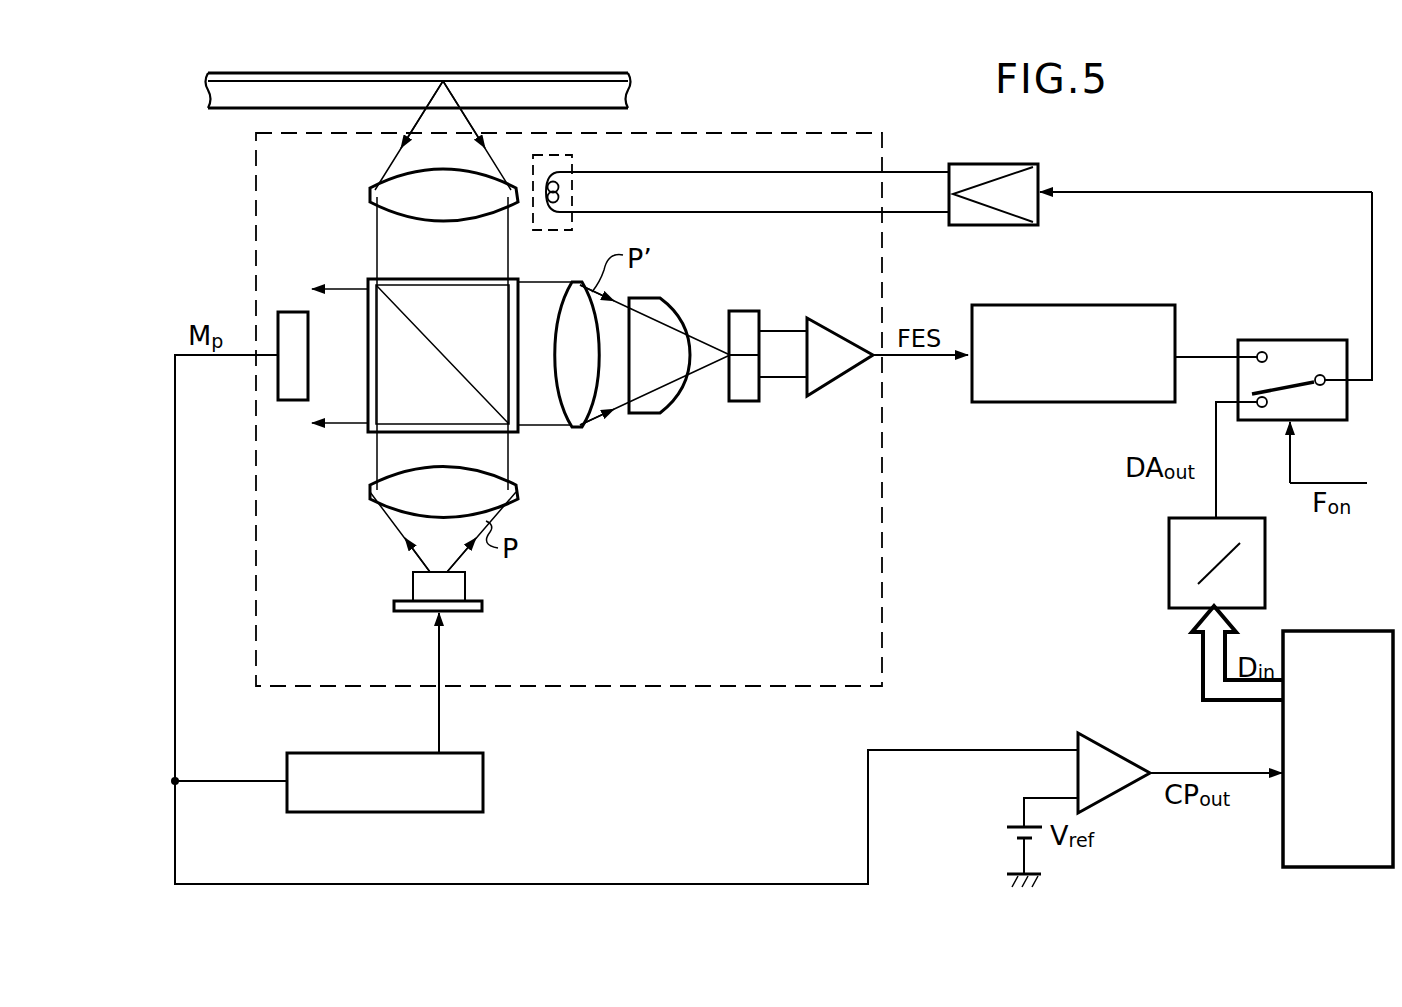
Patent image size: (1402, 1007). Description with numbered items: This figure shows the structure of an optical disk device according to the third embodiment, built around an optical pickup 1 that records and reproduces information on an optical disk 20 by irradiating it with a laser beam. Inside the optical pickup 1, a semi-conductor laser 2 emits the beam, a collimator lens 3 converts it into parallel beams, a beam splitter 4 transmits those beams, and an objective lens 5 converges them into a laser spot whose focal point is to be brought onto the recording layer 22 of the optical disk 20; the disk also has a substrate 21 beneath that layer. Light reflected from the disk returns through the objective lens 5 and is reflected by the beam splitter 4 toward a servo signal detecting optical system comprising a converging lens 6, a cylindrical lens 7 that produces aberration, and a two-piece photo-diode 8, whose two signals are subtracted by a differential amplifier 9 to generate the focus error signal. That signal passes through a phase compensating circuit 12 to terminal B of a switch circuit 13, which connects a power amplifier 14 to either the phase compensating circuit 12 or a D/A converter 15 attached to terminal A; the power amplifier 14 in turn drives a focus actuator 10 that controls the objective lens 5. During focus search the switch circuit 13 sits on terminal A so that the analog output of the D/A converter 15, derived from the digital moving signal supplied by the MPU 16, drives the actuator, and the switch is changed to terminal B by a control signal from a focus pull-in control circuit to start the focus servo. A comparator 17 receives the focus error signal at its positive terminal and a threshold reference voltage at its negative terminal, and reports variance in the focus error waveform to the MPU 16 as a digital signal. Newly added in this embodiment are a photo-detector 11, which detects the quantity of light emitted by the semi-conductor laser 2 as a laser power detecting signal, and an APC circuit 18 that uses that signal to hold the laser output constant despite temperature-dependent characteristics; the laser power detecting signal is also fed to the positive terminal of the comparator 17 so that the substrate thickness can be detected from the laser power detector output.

The optical pickup 1 is at (258, 650).
The semi-conductor laser 2 is at (466, 590).
The collimator lens 3 is at (520, 494).
The beam splitter 4 is at (368, 433).
The objective lens 5 is at (372, 196).
The converging lens 6 is at (577, 430).
The cylindrical lens 7 is at (656, 414).
The two-piece photo-diode 8 is at (745, 402).
The differential amplifier 9 is at (834, 388).
The focus actuator 10 is at (552, 232).
The photo-detector 11 is at (286, 401).
The phase compensating circuit 12 is at (1120, 305).
The switch circuit 13 is at (1308, 340).
The power amplifier 14 is at (991, 226).
The D/A converter 15 is at (1169, 584).
The MPU 16 is at (1283, 843).
The comparator 17 is at (1122, 756).
The APC circuit 18 is at (420, 813).
The optical disk 20 is at (244, 114).
The substrate 21 is at (303, 92).
The recording layer 22 is at (372, 77).